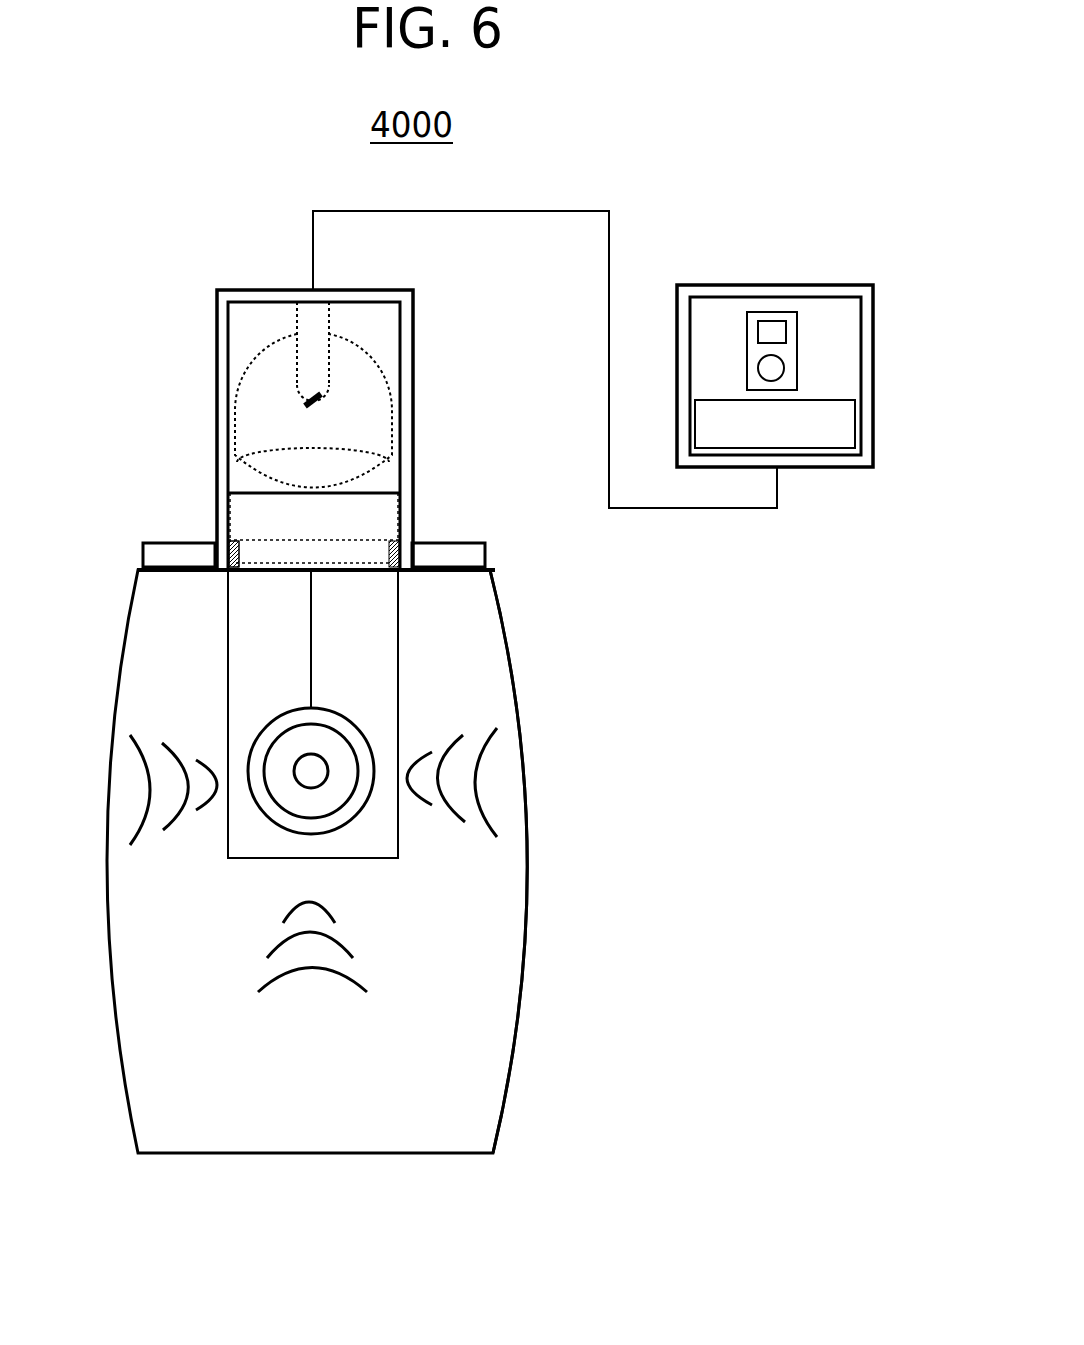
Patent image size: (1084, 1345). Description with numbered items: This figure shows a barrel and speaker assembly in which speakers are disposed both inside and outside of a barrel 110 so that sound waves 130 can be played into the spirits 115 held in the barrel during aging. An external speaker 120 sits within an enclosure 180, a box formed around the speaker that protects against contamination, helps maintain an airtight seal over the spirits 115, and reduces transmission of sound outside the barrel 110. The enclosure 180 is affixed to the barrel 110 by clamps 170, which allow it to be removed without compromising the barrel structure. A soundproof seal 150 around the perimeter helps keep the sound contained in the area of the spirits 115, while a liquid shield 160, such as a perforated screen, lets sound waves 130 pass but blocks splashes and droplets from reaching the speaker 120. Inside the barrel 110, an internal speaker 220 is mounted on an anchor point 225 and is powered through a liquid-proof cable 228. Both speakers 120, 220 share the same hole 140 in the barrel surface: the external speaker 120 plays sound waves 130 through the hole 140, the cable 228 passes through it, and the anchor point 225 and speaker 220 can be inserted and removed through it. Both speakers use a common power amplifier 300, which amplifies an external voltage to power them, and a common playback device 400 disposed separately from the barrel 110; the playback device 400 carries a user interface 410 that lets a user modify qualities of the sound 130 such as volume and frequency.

The barrel 110 is at (463, 1155).
The spirits 115 is at (472, 918).
The external speaker 120 is at (401, 384).
The sound waves 130 is at (166, 858).
The hole 140 is at (387, 519).
The soundproof seal 150 is at (218, 540).
The liquid shield 160 is at (392, 461).
The clamps 170 is at (488, 552).
The enclosure 180 is at (200, 367).
The internal speaker 220 is at (350, 832).
The anchor point 225 is at (257, 678).
The liquid-proof cable 228 is at (320, 612).
The power amplifier 300 is at (823, 428).
The playback device 400 is at (802, 332).
The user interface 410 is at (787, 360).